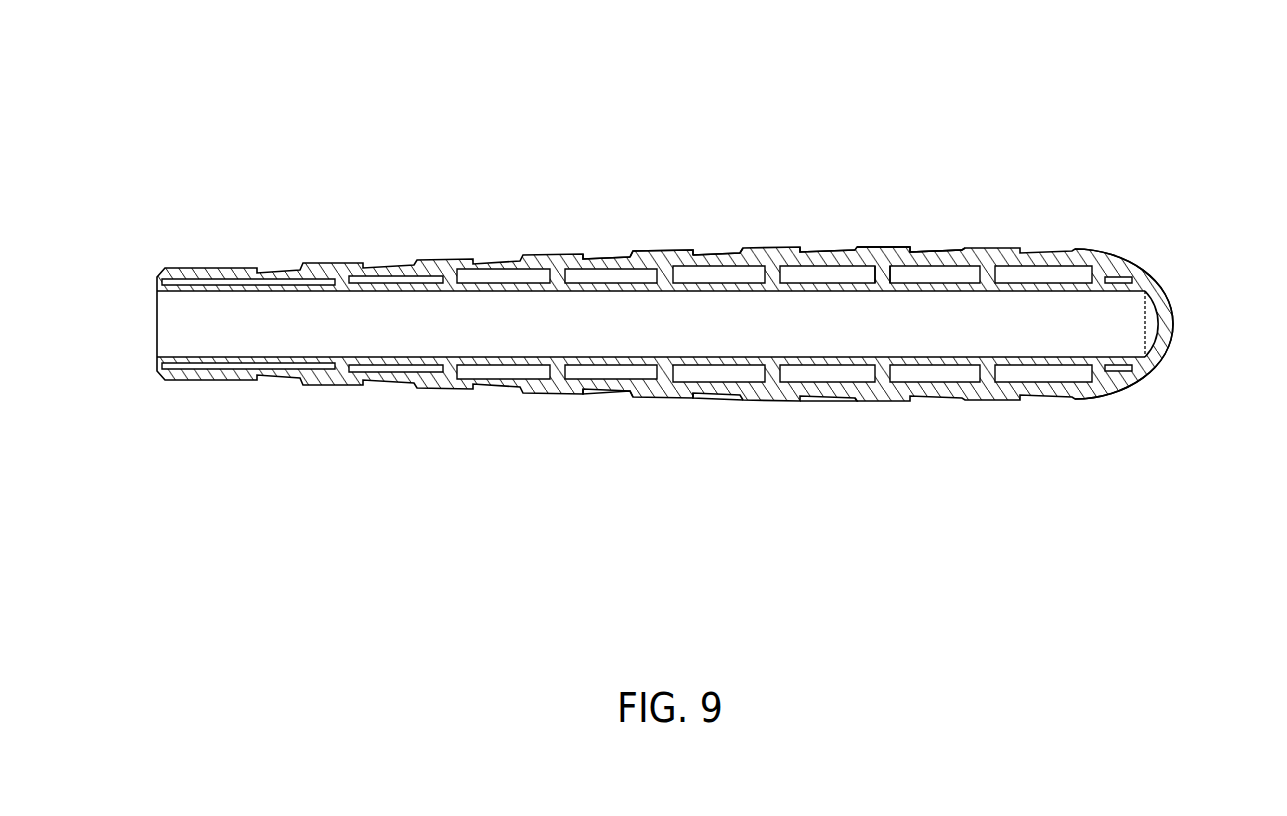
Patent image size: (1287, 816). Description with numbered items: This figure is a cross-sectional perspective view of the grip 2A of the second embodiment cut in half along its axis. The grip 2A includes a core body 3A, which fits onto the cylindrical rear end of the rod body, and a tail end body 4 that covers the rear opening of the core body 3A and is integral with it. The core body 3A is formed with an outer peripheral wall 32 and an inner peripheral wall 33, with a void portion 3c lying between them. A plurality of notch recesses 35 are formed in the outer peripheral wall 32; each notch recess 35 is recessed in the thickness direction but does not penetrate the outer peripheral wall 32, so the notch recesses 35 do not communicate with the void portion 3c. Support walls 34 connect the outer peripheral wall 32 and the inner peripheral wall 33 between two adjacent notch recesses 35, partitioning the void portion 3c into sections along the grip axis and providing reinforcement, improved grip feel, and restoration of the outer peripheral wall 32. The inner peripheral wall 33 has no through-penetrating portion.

The grip 2A is at (868, 168).
The core body 3A is at (660, 248).
The void portion 3c is at (740, 252).
The tail end body 4 is at (1175, 322).
The outer peripheral wall 32 is at (893, 247).
The inner peripheral wall 33 is at (949, 253).
The support wall 34 is at (842, 252).
The notch recess 35 is at (594, 253).